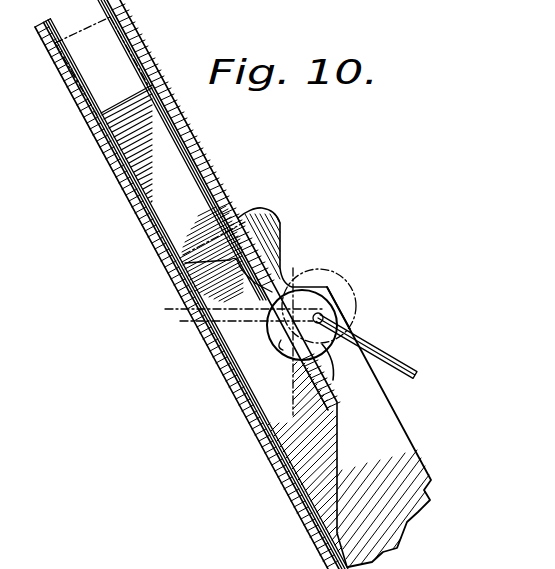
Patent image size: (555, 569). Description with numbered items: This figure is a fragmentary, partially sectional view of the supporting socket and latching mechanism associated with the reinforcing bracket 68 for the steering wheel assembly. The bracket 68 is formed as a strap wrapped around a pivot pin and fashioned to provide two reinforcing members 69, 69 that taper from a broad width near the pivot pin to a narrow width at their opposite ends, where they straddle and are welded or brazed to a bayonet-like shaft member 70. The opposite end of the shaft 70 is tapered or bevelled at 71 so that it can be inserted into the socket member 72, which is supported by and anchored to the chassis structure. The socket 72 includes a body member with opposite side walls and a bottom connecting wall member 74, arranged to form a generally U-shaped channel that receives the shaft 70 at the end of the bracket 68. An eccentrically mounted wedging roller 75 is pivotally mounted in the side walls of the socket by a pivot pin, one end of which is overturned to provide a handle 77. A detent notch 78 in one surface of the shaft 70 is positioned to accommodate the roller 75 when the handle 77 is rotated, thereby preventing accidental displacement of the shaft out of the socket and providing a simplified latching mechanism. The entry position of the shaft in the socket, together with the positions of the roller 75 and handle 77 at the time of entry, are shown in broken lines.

The reinforcing bracket 68 is at (198, 142).
The reinforcing members 69 is at (140, 43).
The bayonet-like shaft member 70 is at (243, 357).
The tapered or bevelled end 71 is at (337, 448).
The socket member 72 is at (278, 492).
The bottom connecting wall member 74 is at (260, 440).
The eccentrically mounted wedging roller 75 is at (327, 270).
The handle 77 is at (165, 309).
The detent notch 78 is at (205, 272).